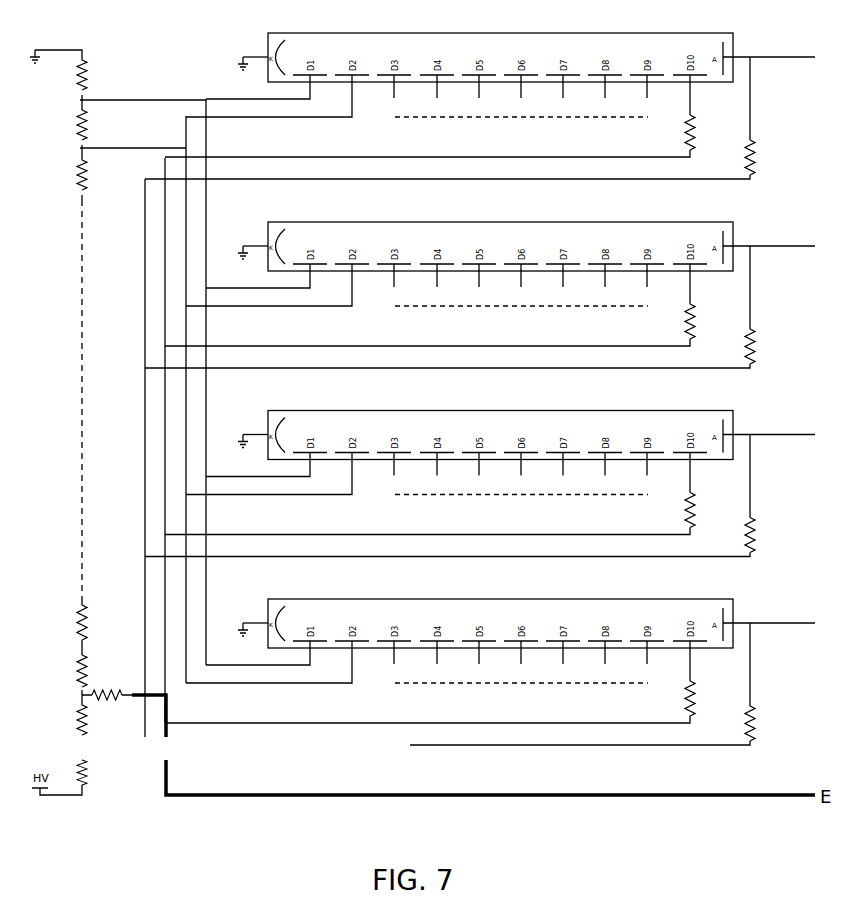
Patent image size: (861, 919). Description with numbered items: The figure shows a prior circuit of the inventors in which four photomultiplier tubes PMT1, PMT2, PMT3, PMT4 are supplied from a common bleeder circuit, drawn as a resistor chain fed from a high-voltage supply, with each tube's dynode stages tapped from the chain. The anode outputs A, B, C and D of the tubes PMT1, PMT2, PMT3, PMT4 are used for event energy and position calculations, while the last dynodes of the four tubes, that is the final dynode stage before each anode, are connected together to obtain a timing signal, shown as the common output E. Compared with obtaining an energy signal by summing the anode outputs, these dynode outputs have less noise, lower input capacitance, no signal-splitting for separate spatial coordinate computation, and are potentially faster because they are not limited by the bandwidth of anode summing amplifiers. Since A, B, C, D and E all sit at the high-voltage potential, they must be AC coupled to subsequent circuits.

The photomultiplier tube PMT1 is at (455, 106).
The photomultiplier tube PMT2 is at (487, 295).
The photomultiplier tube PMT3 is at (487, 484).
The photomultiplier tube PMT4 is at (498, 672).